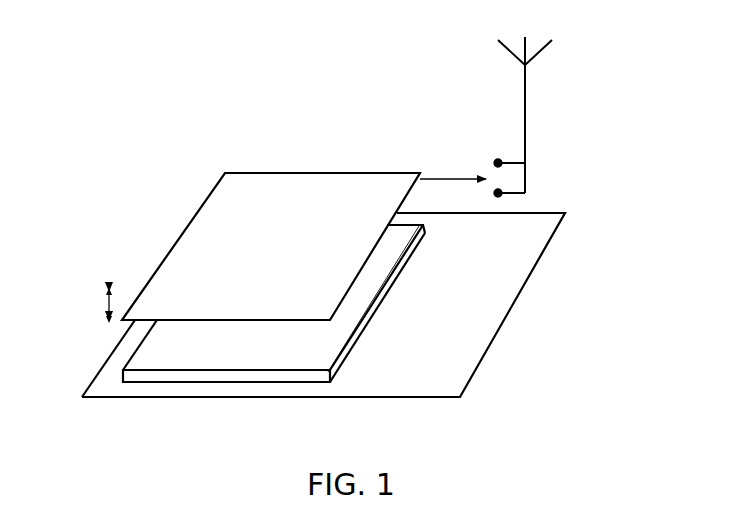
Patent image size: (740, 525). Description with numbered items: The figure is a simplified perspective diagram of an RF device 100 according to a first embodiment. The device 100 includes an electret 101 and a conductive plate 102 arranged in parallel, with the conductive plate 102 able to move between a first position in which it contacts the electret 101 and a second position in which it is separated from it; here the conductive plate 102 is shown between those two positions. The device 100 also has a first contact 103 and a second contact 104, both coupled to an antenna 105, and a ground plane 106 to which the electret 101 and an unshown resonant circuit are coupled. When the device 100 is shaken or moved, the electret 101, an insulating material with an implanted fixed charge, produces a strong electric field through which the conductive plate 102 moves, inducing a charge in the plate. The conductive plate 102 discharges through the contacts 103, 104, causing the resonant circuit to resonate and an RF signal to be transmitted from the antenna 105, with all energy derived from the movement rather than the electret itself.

The RF device 100 is at (146, 161).
The electret 101 is at (210, 367).
The conductive plate 102 is at (308, 197).
The first contact 103 is at (500, 196).
The second contact 104 is at (496, 161).
The antenna 105 is at (527, 90).
The ground plane 106 is at (483, 318).